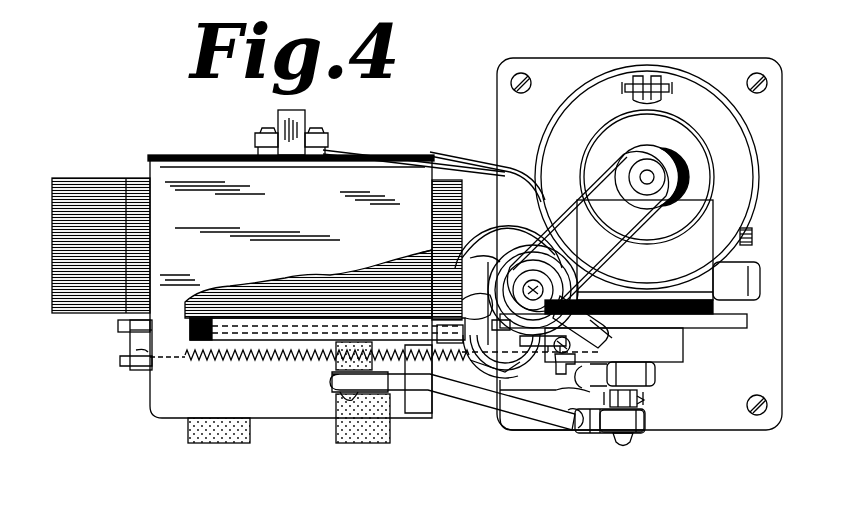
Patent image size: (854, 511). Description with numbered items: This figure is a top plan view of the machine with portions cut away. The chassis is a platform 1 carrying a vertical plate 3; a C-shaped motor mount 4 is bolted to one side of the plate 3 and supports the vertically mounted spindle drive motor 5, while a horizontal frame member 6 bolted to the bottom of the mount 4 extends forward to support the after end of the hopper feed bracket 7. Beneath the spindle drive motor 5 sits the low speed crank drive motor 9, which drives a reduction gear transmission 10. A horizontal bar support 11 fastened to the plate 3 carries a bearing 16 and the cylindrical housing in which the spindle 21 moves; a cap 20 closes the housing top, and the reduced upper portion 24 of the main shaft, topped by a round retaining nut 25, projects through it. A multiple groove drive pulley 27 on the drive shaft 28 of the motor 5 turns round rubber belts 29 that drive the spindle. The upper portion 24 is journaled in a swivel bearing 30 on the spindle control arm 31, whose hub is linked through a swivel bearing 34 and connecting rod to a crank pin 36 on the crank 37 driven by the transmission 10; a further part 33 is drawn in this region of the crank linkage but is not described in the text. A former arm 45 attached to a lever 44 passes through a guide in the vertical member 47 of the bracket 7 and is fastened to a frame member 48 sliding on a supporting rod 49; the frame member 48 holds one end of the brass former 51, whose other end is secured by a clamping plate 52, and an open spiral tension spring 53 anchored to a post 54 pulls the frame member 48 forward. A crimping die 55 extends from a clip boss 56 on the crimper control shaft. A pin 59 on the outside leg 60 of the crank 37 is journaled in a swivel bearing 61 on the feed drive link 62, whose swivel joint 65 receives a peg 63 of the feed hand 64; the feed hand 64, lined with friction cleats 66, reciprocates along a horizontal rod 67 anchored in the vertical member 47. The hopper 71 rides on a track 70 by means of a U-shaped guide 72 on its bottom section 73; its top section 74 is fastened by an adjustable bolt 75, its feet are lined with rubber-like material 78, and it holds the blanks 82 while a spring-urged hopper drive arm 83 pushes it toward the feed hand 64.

The platform 1 is at (712, 425).
The plate 3 is at (748, 322).
The C-shaped motor mount 4 is at (706, 150).
The spindle drive motor 5 is at (635, 72).
The horizontal frame member 6 is at (490, 215).
The hopper feed bracket 7 is at (111, 336).
The low speed crank drive motor 9 is at (752, 236).
The reduction gear transmission 10 is at (760, 275).
The horizontal bar support 11 is at (685, 350).
The bearing 16 is at (492, 302).
The cap 20 is at (598, 288).
The spindle 21 is at (562, 258).
The upper portion of the main shaft 24 is at (580, 296).
The round retaining nut 25 is at (512, 280).
The multiple groove drive pulley 27 is at (672, 168).
The drive shaft 28 is at (650, 175).
The round rubber belts 29 is at (600, 183).
The swivel bearing 30 is at (630, 298).
The spindle control arm 31 is at (612, 340).
The lock nut 33 is at (644, 396).
The swivel bearing 34 is at (656, 376).
The crank pin 36 is at (616, 434).
The crank 37 is at (646, 402).
The lever 44 is at (580, 366).
The former arm 45 is at (560, 350).
The vertical member 47 is at (450, 334).
The frame member 48 is at (535, 310).
The supporting rod 49 is at (499, 354).
The former 51 is at (504, 317).
The clamping plate 52 is at (432, 252).
The open spiral tension spring 53 is at (306, 342).
The post 54 is at (124, 366).
The crimping die 55 is at (500, 384).
The clip boss 56 is at (575, 348).
The pin 59 is at (632, 442).
The outside leg 60 is at (600, 400).
The swivel bearing 61 is at (596, 436).
The feed drive link 62 is at (510, 398).
The peg 63 is at (347, 388).
The feed hand 64 is at (252, 363).
The swivel joint 65 is at (330, 388).
The lining or cleats 66 is at (296, 318).
The horizontal rod 67 is at (128, 337).
The track 70 is at (305, 110).
The hopper 71 is at (210, 145).
The U-shaped guide 72 is at (340, 150).
The bottom section 73 is at (415, 413).
The top section 74 is at (292, 221).
The bolt 75 is at (310, 135).
The rubber-like material 78 is at (235, 443).
The blanks 82 is at (72, 314).
The hopper drive arm 83 is at (465, 160).